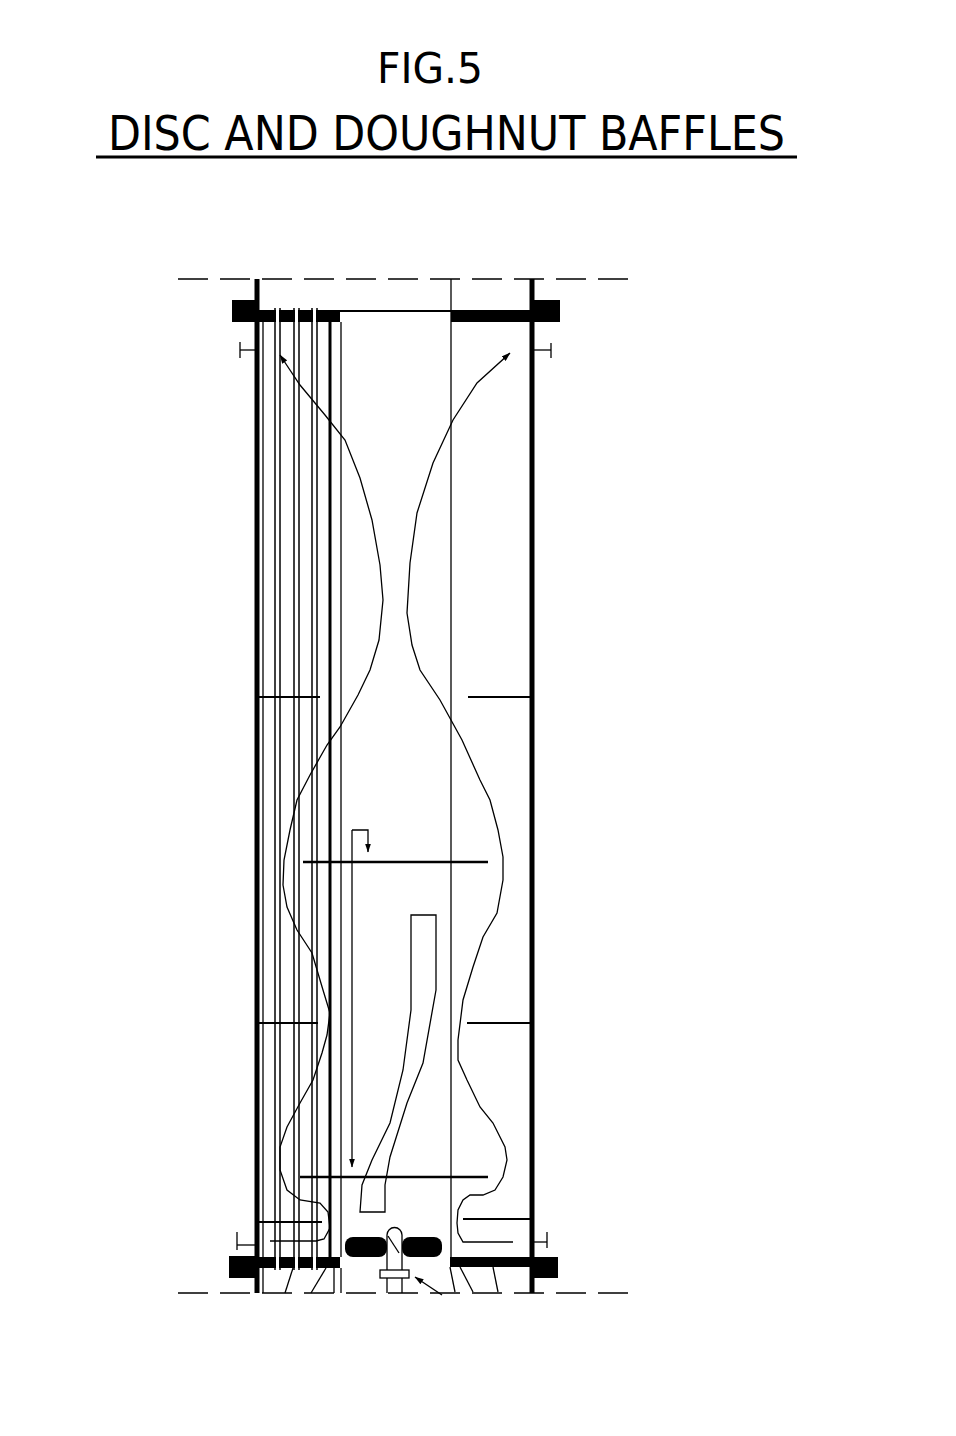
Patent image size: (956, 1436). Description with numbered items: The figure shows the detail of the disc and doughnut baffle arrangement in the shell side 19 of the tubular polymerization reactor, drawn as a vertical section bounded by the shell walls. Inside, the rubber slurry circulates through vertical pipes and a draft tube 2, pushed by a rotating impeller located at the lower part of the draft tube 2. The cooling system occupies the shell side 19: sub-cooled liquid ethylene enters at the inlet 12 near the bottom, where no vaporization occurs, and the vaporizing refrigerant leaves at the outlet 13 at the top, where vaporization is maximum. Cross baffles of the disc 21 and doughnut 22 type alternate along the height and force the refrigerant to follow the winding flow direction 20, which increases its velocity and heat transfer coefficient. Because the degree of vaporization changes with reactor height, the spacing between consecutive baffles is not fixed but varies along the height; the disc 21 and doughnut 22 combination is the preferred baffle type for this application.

The draft tube 2 is at (259, 798).
The liquid ethylene inlet 12 is at (233, 1237).
The outlet 13 is at (232, 347).
The shell side 19 is at (273, 683).
The flow direction 20 is at (234, 789).
The disc baffle 21 is at (394, 1003).
The doughnut baffle 22 is at (505, 1207).